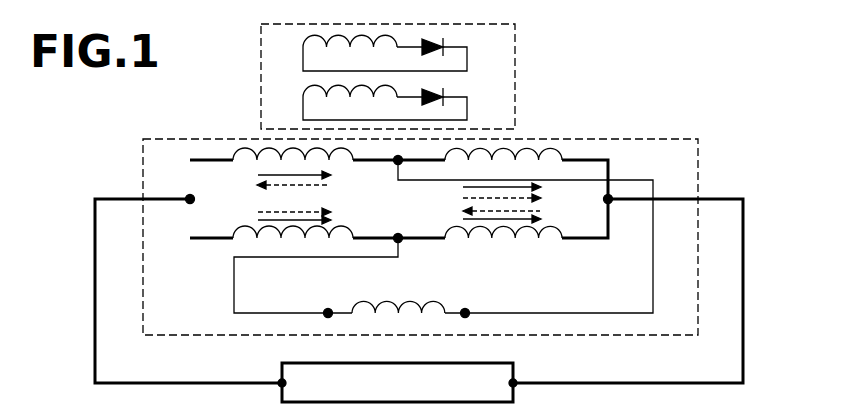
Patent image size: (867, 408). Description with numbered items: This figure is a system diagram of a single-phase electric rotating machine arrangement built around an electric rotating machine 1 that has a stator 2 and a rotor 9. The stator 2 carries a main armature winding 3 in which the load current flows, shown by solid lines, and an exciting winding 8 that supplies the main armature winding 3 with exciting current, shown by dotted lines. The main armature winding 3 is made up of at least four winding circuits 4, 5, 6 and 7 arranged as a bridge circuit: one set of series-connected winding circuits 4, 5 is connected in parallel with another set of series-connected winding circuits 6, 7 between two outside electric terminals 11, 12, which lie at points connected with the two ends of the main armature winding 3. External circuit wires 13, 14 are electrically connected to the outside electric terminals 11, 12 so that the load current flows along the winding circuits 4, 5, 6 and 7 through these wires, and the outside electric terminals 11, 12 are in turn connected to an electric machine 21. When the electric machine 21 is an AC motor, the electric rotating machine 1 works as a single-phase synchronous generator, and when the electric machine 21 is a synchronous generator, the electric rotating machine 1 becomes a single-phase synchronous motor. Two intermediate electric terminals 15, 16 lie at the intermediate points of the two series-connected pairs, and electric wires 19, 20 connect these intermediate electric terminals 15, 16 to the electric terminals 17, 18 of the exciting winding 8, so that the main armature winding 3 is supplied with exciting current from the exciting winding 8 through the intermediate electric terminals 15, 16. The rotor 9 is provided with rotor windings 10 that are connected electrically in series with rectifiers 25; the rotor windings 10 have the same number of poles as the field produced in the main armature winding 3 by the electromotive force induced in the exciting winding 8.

The electric rotating machine 1 is at (654, 122).
The stator 2 is at (698, 154).
The main armature winding 3 is at (409, 220).
The winding circuit 4 is at (257, 162).
The winding circuit 5 is at (566, 151).
The winding circuit 6 is at (241, 226).
The winding circuit 7 is at (540, 243).
The exciting winding 8 is at (419, 305).
The rotor 9 is at (515, 62).
The rotor winding 10 is at (303, 42).
The outside electric terminal 11 is at (187, 203).
The outside electric terminal 12 is at (610, 203).
The external circuit wire 13 is at (130, 201).
The external circuit wire 14 is at (745, 262).
The intermediate electric terminal 15 is at (395, 165).
The intermediate electric terminal 16 is at (401, 243).
The electric terminal 17 is at (326, 311).
The electric terminal 18 is at (471, 308).
The electric wire 19 is at (653, 270).
The electric wire 20 is at (234, 312).
The electric machine 21 is at (516, 373).
The rectifiers 25 is at (445, 43).